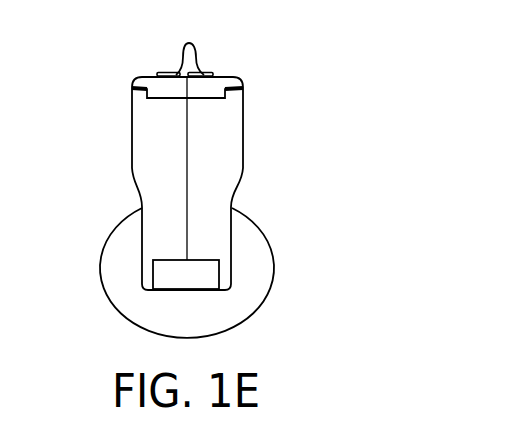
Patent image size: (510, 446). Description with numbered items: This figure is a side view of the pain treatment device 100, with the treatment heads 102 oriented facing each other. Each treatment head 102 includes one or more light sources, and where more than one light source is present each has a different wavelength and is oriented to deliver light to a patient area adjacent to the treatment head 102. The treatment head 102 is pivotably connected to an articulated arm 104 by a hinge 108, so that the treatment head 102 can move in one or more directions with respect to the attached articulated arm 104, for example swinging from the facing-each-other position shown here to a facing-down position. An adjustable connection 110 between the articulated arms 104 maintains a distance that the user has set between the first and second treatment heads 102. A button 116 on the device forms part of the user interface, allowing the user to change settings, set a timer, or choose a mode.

The pain treatment device 100 is at (86, 52).
The treatment head 102 is at (100, 268).
The articulated arm 104 is at (243, 152).
The hinge 108 is at (190, 280).
The adjustable connection 110 is at (132, 99).
The button 116 is at (185, 47).